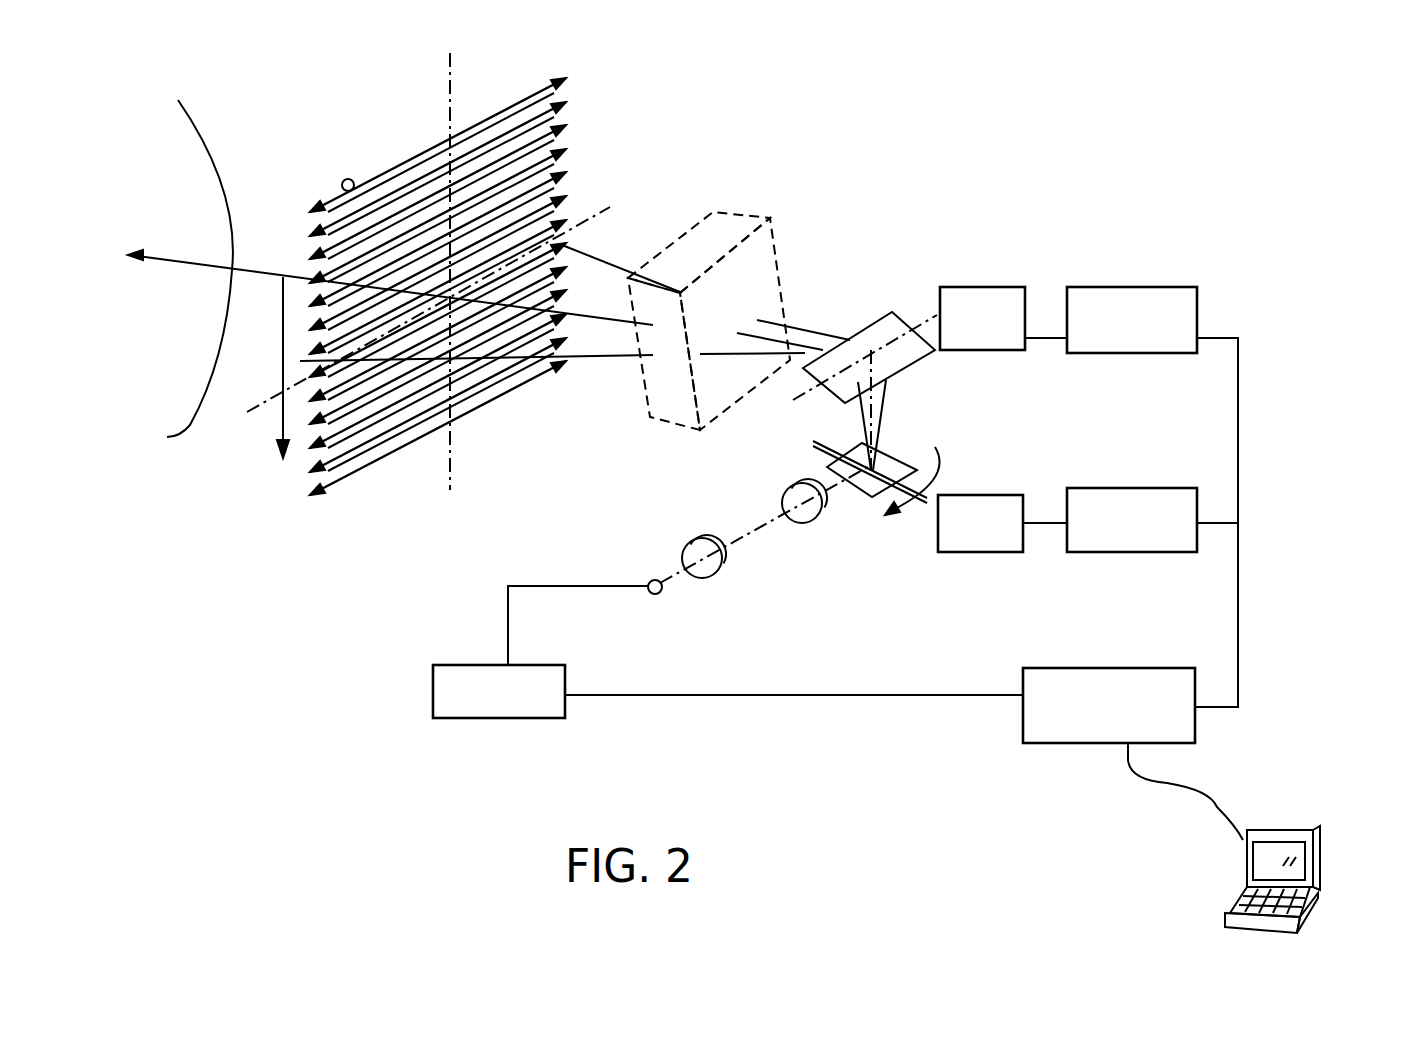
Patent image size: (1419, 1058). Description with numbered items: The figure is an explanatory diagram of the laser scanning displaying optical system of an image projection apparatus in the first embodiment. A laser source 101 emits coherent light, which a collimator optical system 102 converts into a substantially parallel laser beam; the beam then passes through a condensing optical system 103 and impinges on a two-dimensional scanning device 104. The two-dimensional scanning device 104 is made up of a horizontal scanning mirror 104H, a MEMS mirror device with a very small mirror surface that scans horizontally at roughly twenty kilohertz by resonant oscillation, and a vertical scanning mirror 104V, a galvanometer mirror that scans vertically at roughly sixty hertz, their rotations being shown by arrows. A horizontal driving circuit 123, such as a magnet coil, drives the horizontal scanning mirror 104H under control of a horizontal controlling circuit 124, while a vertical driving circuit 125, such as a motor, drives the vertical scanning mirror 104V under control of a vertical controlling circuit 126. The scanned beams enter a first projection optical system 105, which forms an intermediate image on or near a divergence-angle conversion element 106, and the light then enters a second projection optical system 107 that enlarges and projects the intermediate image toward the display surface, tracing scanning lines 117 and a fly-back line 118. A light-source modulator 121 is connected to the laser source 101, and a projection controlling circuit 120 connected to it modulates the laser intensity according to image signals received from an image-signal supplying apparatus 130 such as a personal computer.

The laser source 101 is at (663, 583).
The collimator optical system 102 is at (725, 567).
The condensing optical system 103 is at (803, 505).
The two-dimensional scanning device 104 is at (919, 313).
The vertical scanning mirror 104V is at (897, 295).
The horizontal scanning mirror 104H is at (930, 453).
The first projection optical system 105 is at (767, 248).
The divergence-angle conversion element 106 is at (588, 138).
The second projection optical system 107 is at (179, 268).
The scanning lines 117 is at (478, 119).
The fly-back line 118 is at (507, 337).
The projection controlling circuit 120 is at (1109, 705).
The light-source modulator 121 is at (499, 691).
The horizontal driving circuit 123 is at (980, 523).
The horizontal controlling circuit 124 is at (1132, 520).
The vertical driving circuit 125 is at (982, 318).
The vertical controlling circuit 126 is at (1132, 320).
The image-signal supplying apparatus 130 is at (1308, 917).